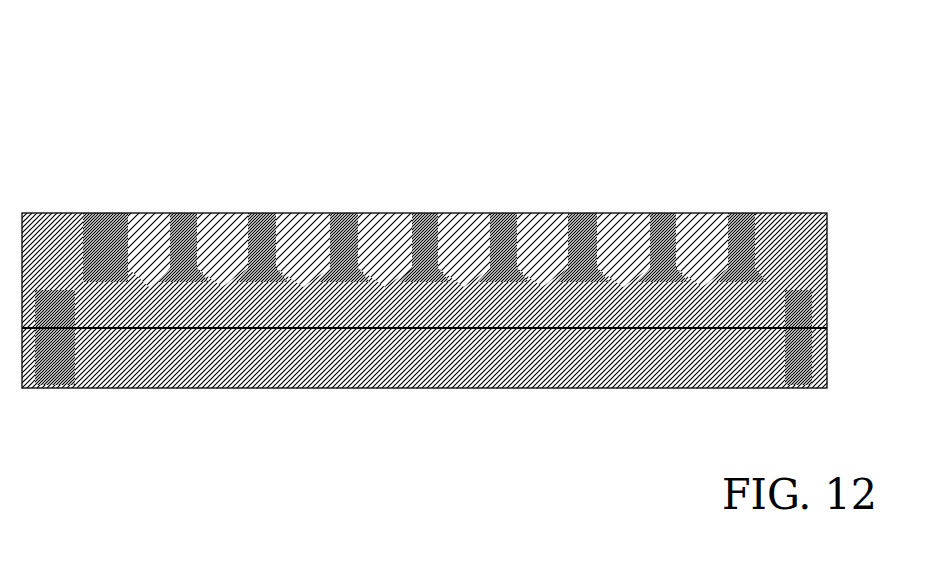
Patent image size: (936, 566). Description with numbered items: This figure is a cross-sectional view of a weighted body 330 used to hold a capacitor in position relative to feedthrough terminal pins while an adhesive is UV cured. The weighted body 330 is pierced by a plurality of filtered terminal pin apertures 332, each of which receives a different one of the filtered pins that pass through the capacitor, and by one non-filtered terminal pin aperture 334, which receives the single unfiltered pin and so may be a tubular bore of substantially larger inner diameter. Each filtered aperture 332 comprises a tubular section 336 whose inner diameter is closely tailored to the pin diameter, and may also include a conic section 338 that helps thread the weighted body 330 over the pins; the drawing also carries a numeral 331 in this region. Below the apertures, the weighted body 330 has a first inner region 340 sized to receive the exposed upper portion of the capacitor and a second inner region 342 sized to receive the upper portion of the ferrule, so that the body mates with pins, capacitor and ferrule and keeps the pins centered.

The weighted body 330 is at (650, 110).
The pillars 331 is at (182, 232).
The filtered terminal pin apertures 332 is at (743, 223).
The non-filtered terminal pin aperture 334 is at (108, 222).
The tubular section 336 is at (277, 238).
The conic section 338 is at (345, 278).
The first inner region 340 is at (780, 317).
The second inner region 342 is at (705, 370).